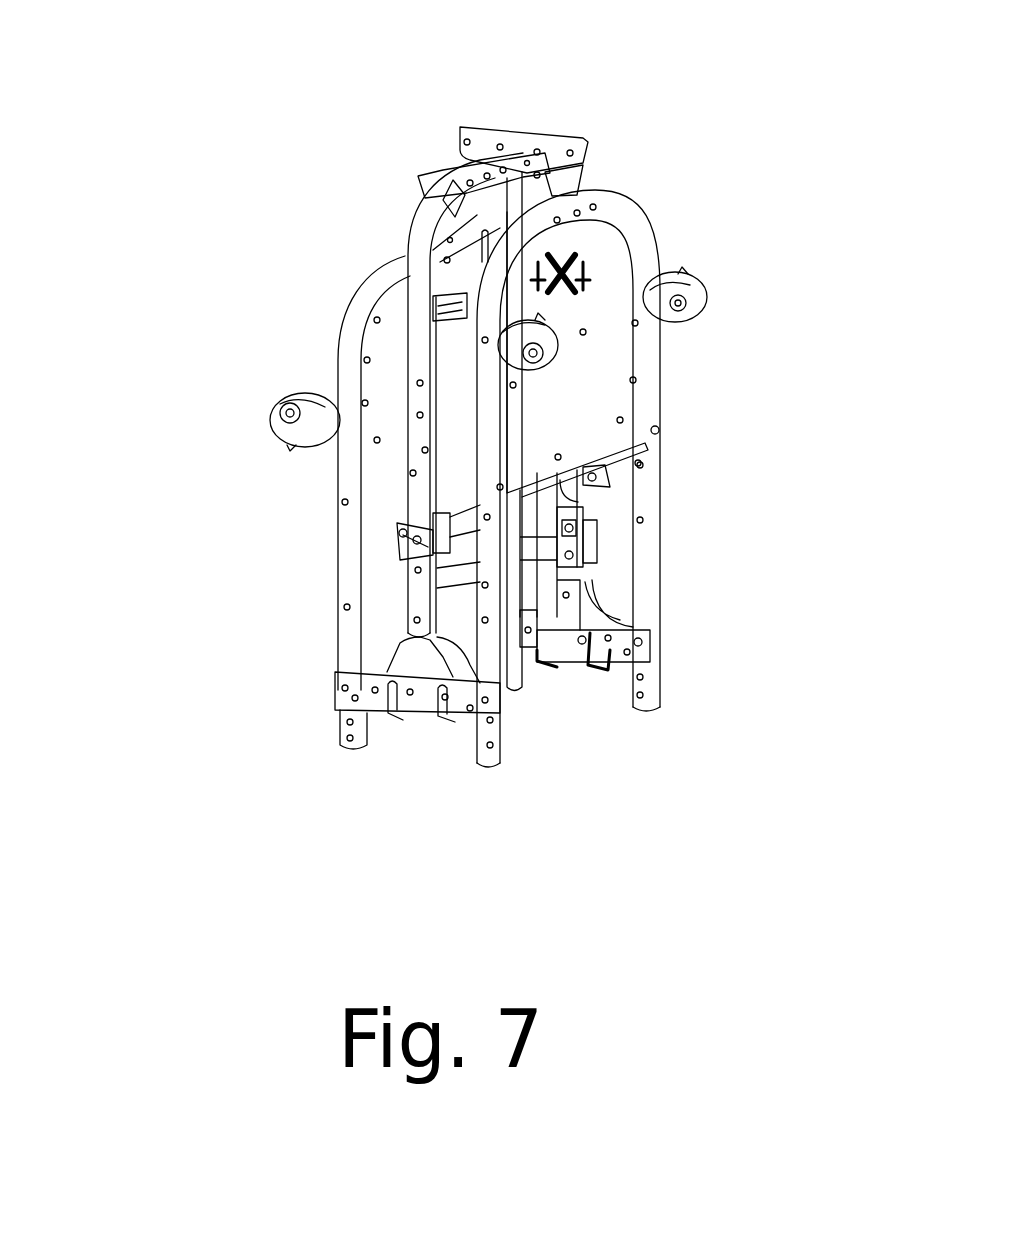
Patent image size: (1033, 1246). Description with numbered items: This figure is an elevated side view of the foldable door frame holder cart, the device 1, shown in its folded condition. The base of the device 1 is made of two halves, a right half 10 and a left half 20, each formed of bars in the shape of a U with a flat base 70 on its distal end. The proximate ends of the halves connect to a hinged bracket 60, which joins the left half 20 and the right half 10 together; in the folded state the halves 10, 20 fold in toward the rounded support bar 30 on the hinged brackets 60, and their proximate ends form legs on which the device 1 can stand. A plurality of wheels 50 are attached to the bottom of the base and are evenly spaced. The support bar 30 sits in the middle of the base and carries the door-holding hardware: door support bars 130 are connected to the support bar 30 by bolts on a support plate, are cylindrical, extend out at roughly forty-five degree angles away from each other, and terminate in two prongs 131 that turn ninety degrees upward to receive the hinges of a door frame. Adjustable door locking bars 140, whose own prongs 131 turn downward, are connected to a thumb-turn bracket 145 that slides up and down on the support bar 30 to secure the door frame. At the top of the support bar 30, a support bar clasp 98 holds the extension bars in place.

The device 1 is at (377, 181).
The right half 10 is at (507, 733).
The left half 20 is at (328, 727).
The support bar 30 is at (428, 483).
The wheels 50 is at (710, 297).
The hinged bracket 60 is at (410, 713).
The flat base 70 is at (613, 392).
The support bar clasp 98 is at (516, 143).
The door support bars 130 is at (597, 511).
The prongs 131 is at (598, 538).
The adjustable door locking bars 140 is at (596, 546).
The thumb-turn bracket 145 is at (410, 548).